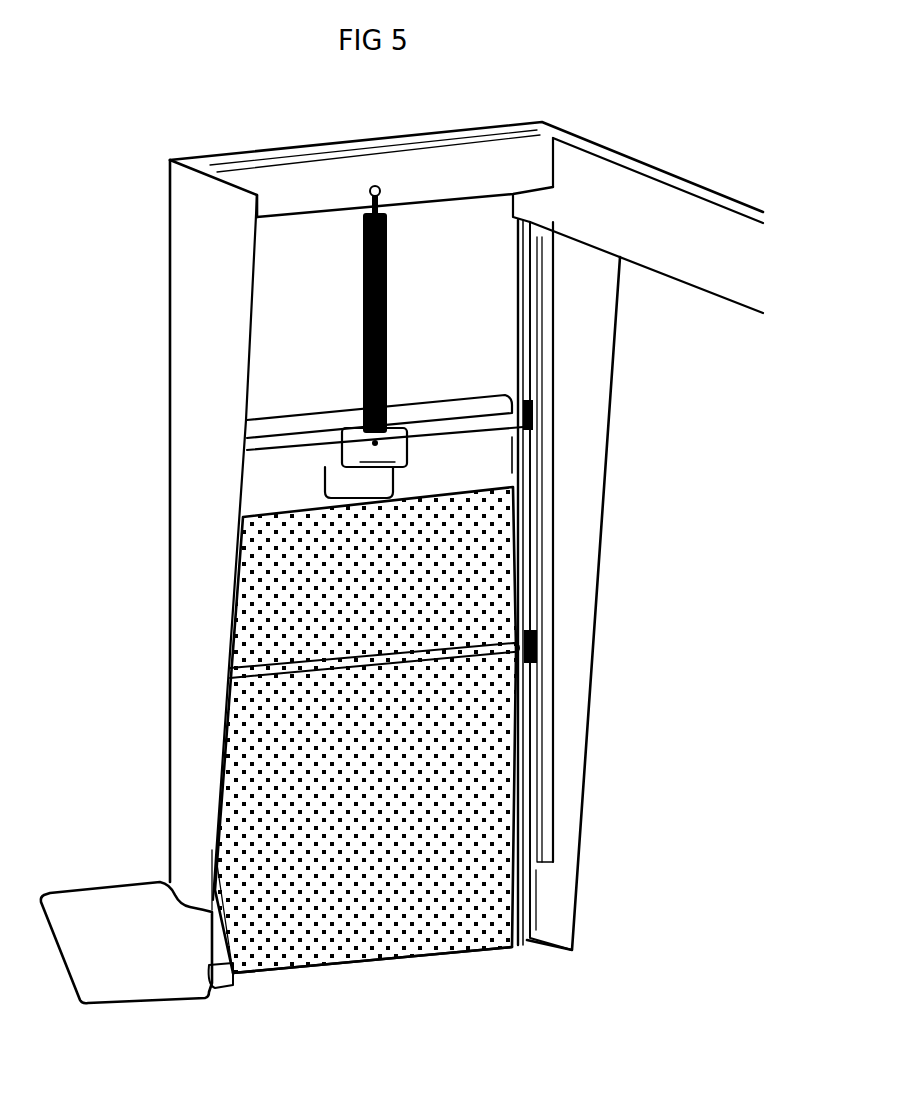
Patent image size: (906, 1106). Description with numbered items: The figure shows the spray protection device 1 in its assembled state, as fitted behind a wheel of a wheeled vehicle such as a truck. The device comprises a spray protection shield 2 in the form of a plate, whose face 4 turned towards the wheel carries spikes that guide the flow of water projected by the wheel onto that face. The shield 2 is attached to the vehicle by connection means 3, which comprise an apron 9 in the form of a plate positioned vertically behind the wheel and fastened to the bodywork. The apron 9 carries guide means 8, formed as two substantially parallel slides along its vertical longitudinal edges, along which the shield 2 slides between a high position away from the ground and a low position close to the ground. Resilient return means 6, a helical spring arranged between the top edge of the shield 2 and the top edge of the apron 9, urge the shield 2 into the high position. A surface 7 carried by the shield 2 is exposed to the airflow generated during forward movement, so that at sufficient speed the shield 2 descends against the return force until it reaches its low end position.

The spray protection device 1 is at (670, 467).
The spray protection shield 2 is at (430, 920).
The connection means 3 is at (158, 482).
The face 4 is at (313, 943).
The resilient return means 6 is at (395, 262).
The surface 7 is at (112, 907).
The guide means 8 is at (535, 282).
The apron 9 is at (450, 298).